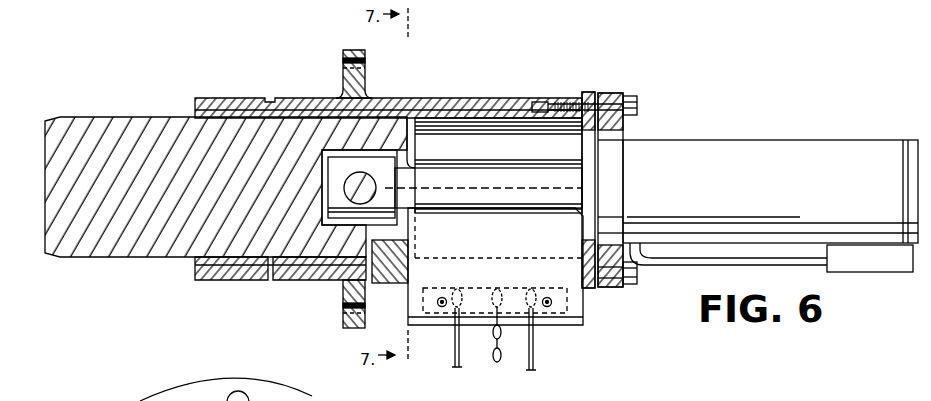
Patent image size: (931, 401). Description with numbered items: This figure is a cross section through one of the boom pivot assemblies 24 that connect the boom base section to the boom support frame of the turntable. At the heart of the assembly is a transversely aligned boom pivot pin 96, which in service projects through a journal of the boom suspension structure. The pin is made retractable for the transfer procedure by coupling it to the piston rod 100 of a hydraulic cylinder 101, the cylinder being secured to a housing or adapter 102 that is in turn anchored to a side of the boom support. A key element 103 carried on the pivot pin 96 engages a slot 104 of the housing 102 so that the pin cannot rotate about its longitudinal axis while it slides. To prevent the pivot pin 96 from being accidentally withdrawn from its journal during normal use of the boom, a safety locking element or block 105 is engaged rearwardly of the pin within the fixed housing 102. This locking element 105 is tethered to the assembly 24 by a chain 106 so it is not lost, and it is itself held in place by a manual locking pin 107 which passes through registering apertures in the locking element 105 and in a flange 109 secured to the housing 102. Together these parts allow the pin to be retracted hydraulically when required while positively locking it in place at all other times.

The boom pivot pin 96 is at (149, 133).
The housing 102 is at (498, 97).
The boom pivot assembly 24 is at (435, 80).
The slot 104 is at (343, 283).
The key element 103 is at (408, 266).
The piston rod 100 is at (493, 198).
The safety locking element 105 is at (543, 241).
The manual locking pin 107 is at (547, 298).
The chain 106 is at (496, 361).
The flange 109 is at (512, 305).
The hydraulic cylinder 101 is at (782, 145).